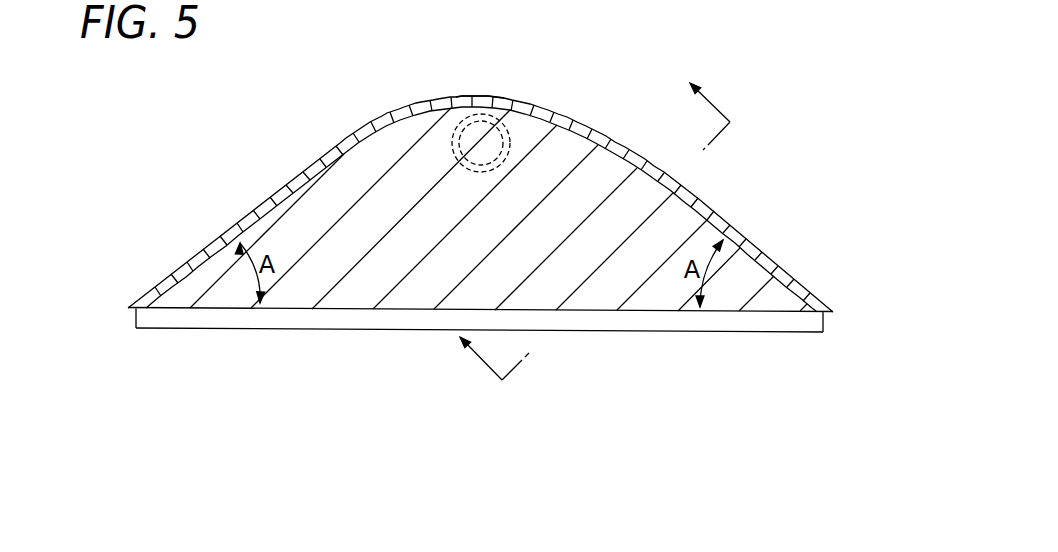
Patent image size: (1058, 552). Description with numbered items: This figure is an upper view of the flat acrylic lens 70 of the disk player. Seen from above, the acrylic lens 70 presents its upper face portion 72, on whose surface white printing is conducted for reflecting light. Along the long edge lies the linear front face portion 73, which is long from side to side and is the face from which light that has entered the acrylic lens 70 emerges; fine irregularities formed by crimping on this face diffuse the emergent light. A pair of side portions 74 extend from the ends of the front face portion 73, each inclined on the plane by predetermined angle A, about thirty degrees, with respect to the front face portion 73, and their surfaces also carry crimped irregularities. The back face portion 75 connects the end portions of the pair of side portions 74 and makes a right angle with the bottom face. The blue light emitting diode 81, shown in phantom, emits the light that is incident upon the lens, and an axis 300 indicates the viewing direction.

The acrylic lens 70 is at (562, 88).
The upper face portion 72 is at (480, 346).
The front face portion 73 is at (292, 332).
The side portions 74 is at (247, 210).
The back face portion 75 is at (481, 96).
The blue light emitting diode 81 is at (453, 135).
The direction axis 300 is at (601, 238).